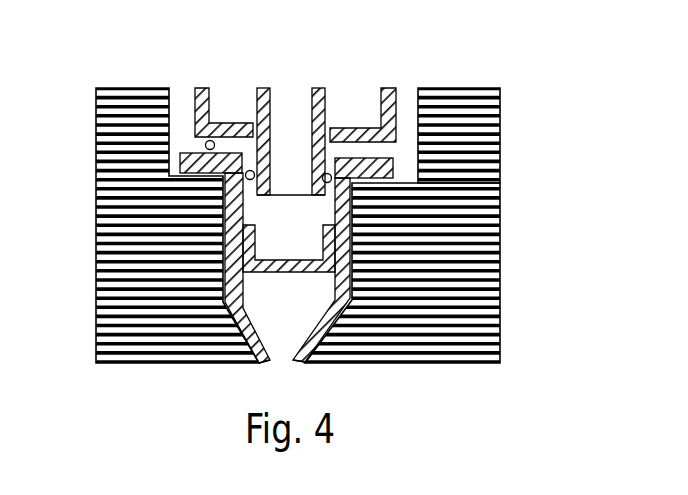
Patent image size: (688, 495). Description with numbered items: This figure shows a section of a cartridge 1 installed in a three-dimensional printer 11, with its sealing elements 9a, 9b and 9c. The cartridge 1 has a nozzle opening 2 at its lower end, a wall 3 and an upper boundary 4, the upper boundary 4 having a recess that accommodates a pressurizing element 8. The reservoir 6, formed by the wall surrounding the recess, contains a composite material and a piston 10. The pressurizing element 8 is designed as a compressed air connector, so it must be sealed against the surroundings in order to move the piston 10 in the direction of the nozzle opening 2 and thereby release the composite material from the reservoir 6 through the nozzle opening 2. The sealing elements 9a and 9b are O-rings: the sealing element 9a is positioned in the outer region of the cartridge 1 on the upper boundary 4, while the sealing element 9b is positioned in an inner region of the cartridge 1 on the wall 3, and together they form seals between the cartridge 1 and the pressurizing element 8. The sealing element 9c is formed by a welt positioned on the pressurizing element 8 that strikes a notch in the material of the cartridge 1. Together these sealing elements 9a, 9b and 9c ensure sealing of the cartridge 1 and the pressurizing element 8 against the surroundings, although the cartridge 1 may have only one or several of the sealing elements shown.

The cartridge 1 is at (430, 73).
The nozzle opening 2 is at (275, 362).
The wall 3 is at (405, 237).
The upper boundary 4 is at (182, 166).
The reservoir 6 is at (288, 287).
The pressurizing element 8 is at (290, 170).
The sealing element 9a is at (212, 141).
The sealing element 9b is at (327, 173).
The sealing element 9c is at (366, 149).
The piston 10 is at (302, 243).
The 3D printer 11 is at (487, 345).